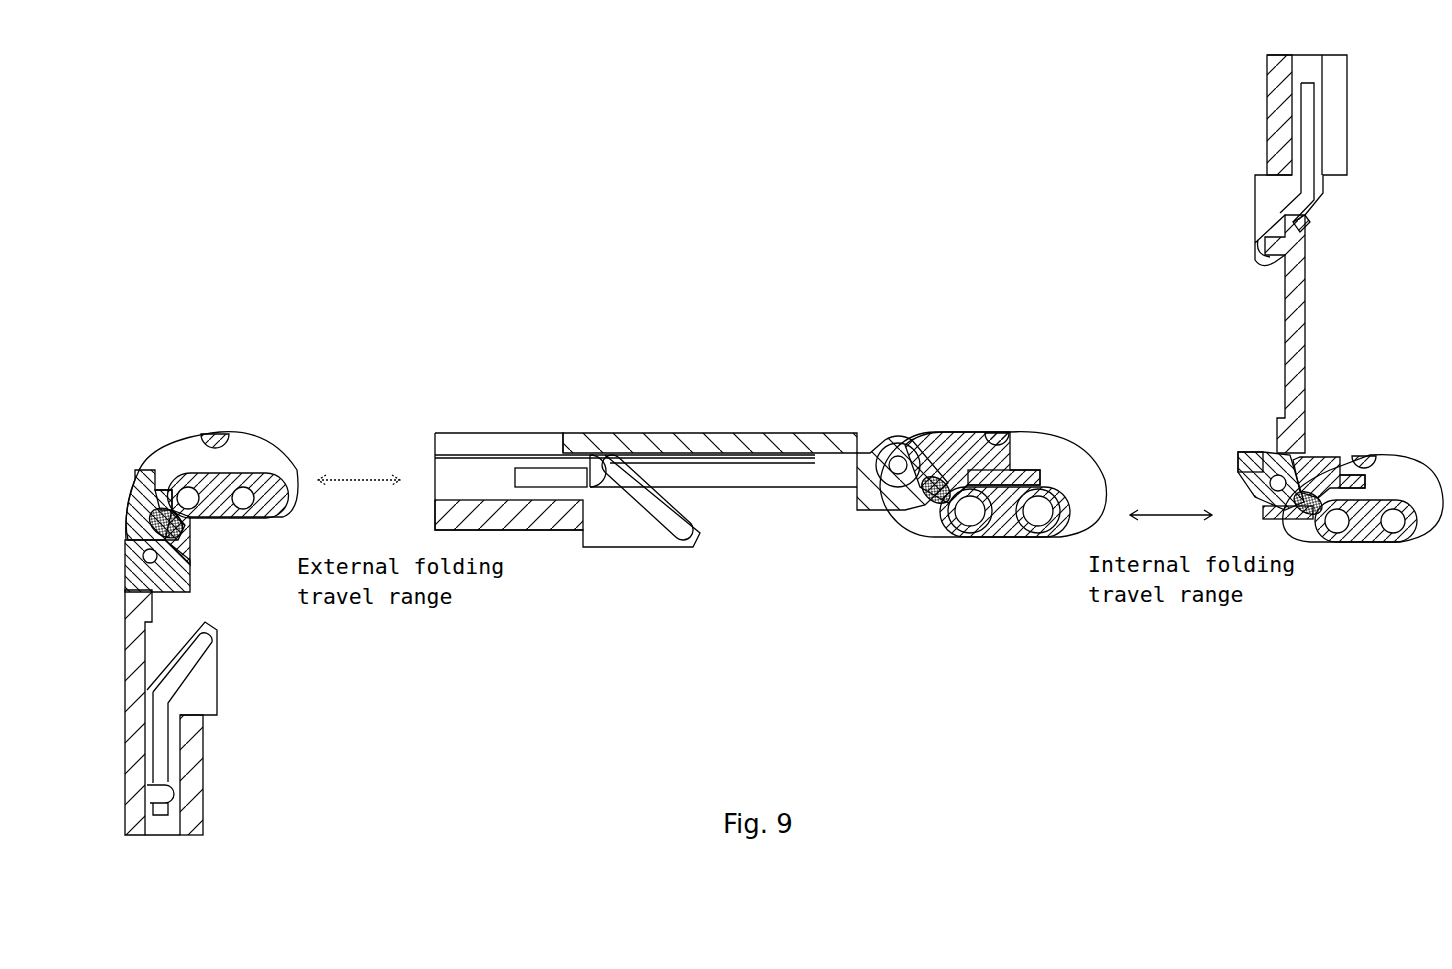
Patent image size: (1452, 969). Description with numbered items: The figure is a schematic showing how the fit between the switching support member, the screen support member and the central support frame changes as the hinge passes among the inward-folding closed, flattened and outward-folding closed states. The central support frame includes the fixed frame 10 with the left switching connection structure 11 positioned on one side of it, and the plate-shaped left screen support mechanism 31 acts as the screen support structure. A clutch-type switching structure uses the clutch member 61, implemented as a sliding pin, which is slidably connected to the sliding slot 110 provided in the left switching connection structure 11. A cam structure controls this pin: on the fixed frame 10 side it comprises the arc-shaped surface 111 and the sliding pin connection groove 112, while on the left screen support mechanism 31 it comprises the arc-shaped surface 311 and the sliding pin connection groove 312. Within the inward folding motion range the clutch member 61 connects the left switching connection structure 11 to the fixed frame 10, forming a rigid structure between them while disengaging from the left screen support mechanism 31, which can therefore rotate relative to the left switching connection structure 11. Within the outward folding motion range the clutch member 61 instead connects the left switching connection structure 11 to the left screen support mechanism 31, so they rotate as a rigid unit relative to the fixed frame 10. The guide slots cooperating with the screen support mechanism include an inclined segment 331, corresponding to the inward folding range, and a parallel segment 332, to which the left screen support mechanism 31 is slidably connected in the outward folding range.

The fixed frame 10 is at (252, 460).
The left switching connection structure 11 is at (138, 474).
The sliding slot 110 is at (187, 520).
The arc-shaped surface 111 is at (178, 488).
The sliding pin connection groove 112 is at (170, 490).
The left screen support mechanism 31 is at (127, 668).
The arc-shaped surface 311 is at (133, 500).
The sliding pin connection groove 312 is at (180, 570).
The inclined segment 331 is at (1302, 217).
The parallel segment 332 is at (163, 813).
The clutch member 61 is at (937, 498).